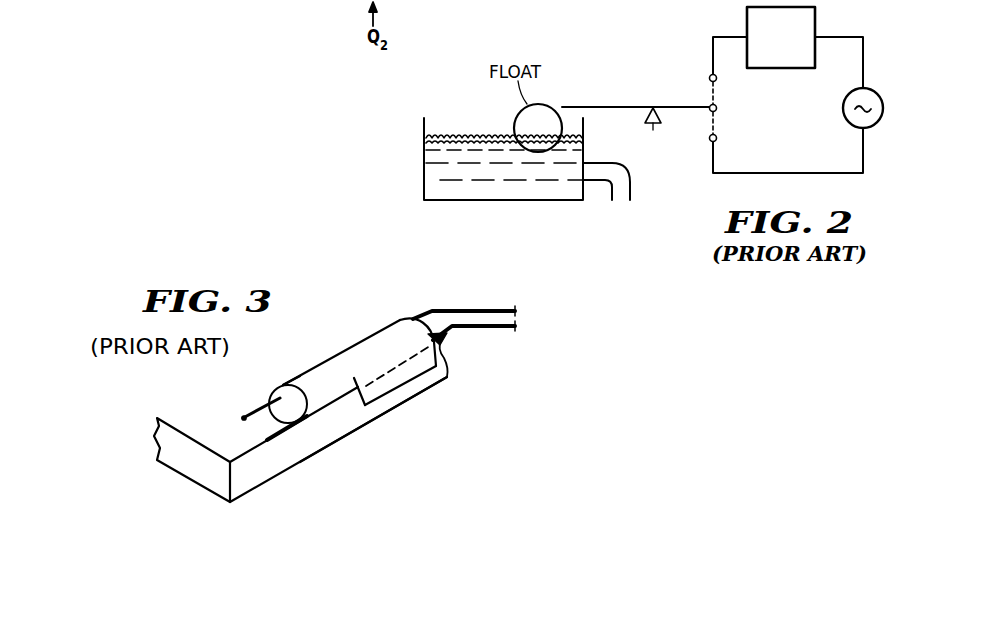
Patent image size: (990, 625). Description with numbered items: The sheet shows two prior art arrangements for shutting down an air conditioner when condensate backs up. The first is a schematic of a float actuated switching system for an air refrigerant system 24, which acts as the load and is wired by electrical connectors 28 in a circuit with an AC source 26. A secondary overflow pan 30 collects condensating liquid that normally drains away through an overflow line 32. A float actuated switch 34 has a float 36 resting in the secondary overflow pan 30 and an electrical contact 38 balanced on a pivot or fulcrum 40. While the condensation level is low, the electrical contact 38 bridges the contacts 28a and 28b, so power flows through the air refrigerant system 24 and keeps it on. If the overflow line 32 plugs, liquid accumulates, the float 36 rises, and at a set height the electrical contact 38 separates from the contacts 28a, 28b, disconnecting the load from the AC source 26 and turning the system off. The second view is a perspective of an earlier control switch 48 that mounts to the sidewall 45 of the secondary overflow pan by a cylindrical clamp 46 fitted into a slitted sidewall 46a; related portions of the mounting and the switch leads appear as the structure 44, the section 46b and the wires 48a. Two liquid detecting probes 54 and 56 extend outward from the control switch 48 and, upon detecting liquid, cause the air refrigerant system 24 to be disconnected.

In FIG. 2, the air refrigerant system 24 is at (816, 15).
In FIG. 2, the AC source 26 is at (883, 110).
In FIG. 2, the electrical connectors 28 is at (863, 58).
In FIG. 2, the contact 28a is at (716, 80).
In FIG. 2, the contact 28b is at (716, 140).
In FIG. 2, the secondary overflow pan 30 is at (424, 168).
In FIG. 2, the overflow line 32 is at (631, 188).
In FIG. 2, the float actuated switch 34 is at (626, 100).
In FIG. 2, the float 36 is at (514, 118).
In FIG. 2, the electrical contact 38 is at (709, 106).
In FIG. 2, the pivot or fulcrum 40 is at (653, 130).
In FIG. 3, the mounting board 44 is at (313, 456).
In FIG. 3, the sidewall 45 is at (333, 433).
In FIG. 3, the cylindrical clamp 46 is at (356, 343).
In FIG. 3, the slitted sidewall 46a is at (404, 385).
In FIG. 3, the bulb shoulder 46b is at (366, 398).
In FIG. 3, the control switch 48 is at (296, 380).
In FIG. 3, the lead wires 48a is at (477, 310).
In FIG. 3, the liquid detecting probe 54 is at (241, 418).
In FIG. 3, the liquid detecting probe 56 is at (270, 431).